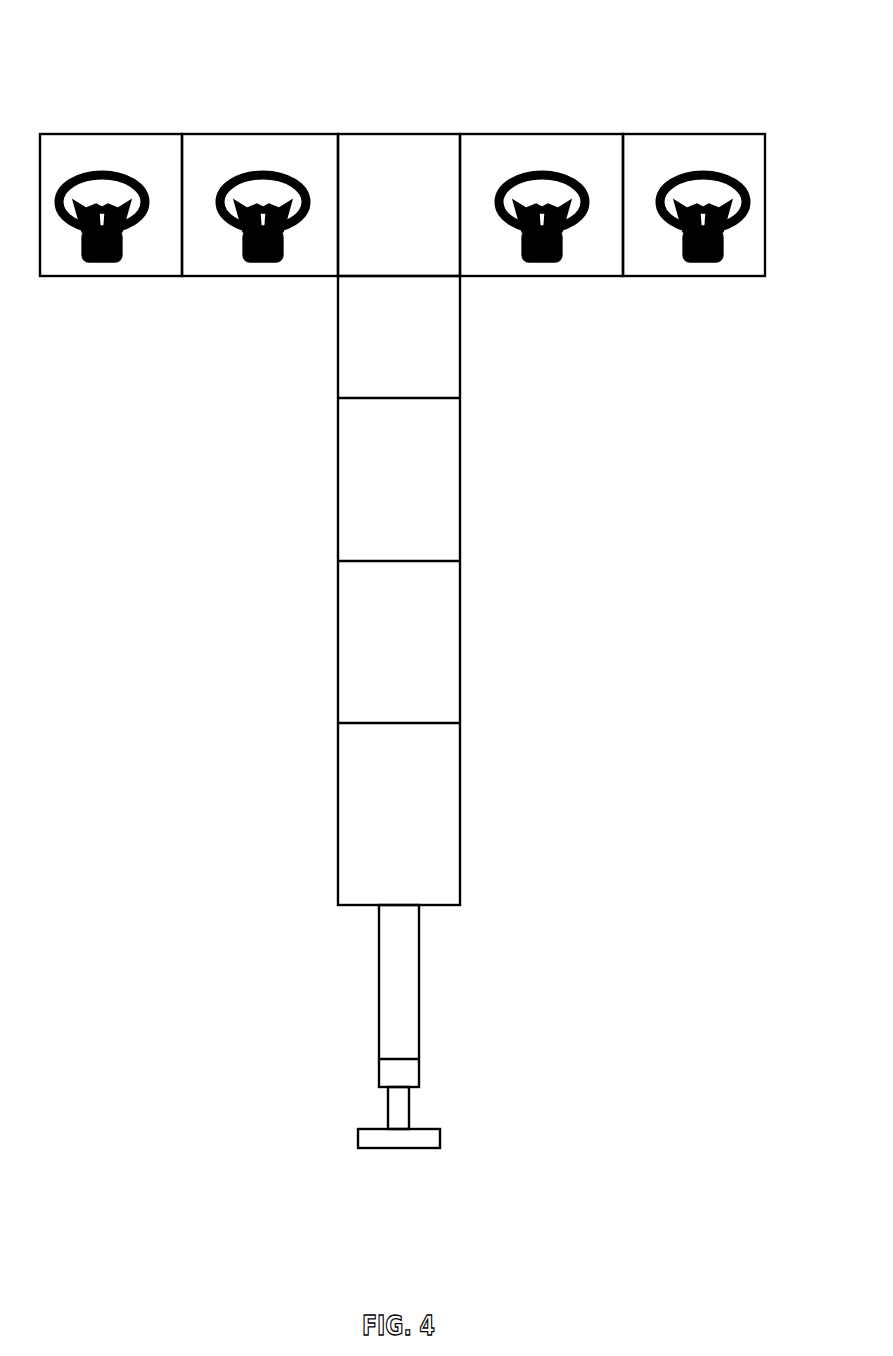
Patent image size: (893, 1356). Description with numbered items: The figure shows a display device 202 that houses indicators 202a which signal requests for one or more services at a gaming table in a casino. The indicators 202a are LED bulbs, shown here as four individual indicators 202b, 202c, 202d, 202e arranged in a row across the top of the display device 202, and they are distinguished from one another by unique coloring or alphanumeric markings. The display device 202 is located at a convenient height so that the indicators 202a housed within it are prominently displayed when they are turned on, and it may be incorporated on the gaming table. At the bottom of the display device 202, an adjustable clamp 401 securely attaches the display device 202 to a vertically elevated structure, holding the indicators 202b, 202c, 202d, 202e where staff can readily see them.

The display device 202 is at (473, 572).
The indicators 202a is at (438, 65).
The indicator 202b is at (128, 122).
The indicator 202c is at (251, 122).
The indicator 202d is at (556, 122).
The indicator 202e is at (679, 122).
The adjustable clamp 401 is at (431, 1120).